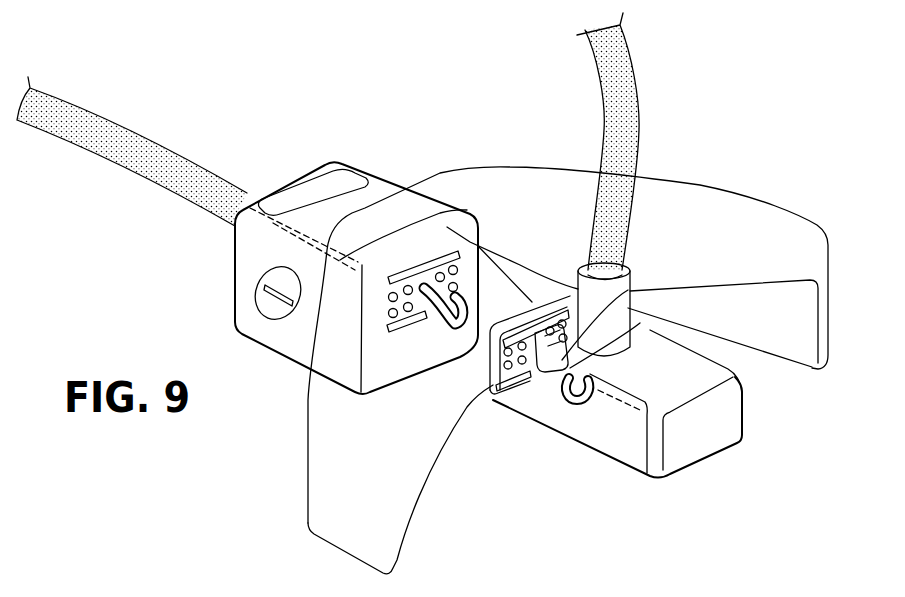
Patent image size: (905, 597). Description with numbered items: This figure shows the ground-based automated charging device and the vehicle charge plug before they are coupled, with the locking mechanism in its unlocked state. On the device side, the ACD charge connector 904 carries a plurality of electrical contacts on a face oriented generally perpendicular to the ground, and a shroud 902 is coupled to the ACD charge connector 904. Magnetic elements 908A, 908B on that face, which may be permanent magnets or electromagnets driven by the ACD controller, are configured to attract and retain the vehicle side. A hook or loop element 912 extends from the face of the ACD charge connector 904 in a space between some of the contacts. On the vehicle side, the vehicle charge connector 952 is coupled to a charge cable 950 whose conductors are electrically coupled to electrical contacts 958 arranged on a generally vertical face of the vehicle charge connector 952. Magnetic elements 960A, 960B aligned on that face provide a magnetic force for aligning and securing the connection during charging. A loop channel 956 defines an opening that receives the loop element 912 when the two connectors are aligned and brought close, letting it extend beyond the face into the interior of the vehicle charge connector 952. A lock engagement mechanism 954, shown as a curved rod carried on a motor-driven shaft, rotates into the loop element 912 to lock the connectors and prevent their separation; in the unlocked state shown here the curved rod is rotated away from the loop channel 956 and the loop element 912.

The shroud 902 is at (705, 185).
The ACD charge connector 904 is at (302, 152).
The magnetic element 908A is at (397, 326).
The magnetic element 908B is at (405, 275).
The loop element 912 is at (448, 330).
The charge cable 950 is at (640, 116).
The vehicle charge connector 952 is at (742, 415).
The lock engagement mechanism 954 is at (515, 398).
The loop channel 956 is at (640, 323).
The electrical contacts 958 is at (628, 290).
The magnetic element 960A is at (527, 393).
The magnetic element 960B is at (553, 300).